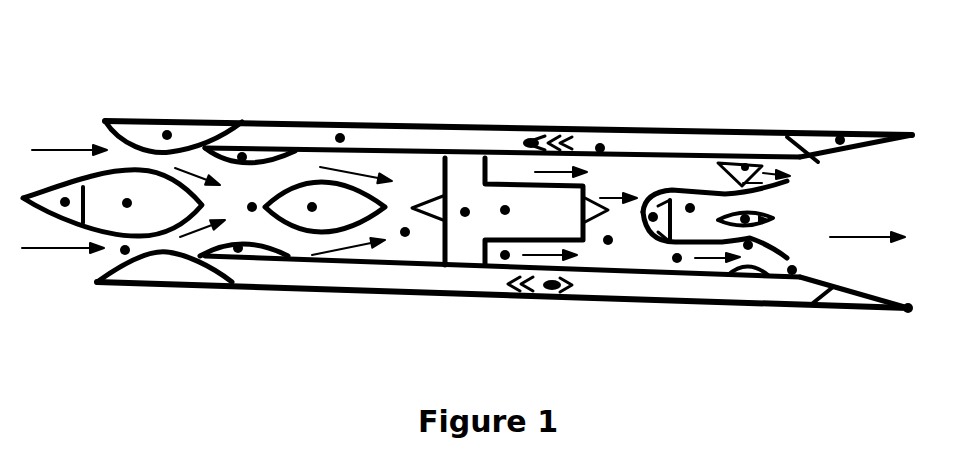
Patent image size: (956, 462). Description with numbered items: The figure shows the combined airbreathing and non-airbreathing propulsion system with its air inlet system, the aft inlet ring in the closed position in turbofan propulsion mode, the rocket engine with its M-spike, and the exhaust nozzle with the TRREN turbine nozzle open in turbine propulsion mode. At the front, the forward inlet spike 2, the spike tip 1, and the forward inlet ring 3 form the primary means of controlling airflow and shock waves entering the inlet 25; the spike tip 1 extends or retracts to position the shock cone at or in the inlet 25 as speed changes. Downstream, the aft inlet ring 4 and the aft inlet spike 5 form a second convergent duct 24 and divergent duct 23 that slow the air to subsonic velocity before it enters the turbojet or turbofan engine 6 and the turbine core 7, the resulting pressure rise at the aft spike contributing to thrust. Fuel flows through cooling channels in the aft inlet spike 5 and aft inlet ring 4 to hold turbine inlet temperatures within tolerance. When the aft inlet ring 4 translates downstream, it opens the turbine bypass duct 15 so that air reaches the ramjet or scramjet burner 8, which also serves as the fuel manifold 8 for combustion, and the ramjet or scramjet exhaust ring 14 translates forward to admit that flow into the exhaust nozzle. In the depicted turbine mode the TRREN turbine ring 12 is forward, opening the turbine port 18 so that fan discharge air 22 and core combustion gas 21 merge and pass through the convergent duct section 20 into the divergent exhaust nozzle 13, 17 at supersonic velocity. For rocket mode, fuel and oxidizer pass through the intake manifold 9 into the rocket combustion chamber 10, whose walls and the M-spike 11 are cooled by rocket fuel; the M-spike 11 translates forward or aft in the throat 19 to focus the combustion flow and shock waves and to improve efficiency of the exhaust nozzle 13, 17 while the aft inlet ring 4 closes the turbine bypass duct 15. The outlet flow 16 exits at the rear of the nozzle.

The spike tip 1 is at (66, 197).
The forward inlet spike 2 is at (126, 198).
The forward inlet ring 3 is at (167, 131).
The aft inlet ring 4 is at (242, 153).
The aft inlet spike 5 is at (312, 202).
The turbojet or turbofan engine 6 is at (464, 207).
The turbine core 7 is at (504, 205).
The ramjet or scramjet burner 8 is at (529, 138).
The intake manifold 9 is at (652, 212).
The rocket combustion chamber 10 is at (689, 203).
The M-spike 11 is at (744, 214).
The TRREN turbine ring 12 is at (746, 163).
The divergent exhaust nozzle 13 is at (813, 137).
The ramjet or scramjet exhaust ring 14 is at (841, 136).
The turbine bypass duct 15 is at (341, 134).
The outlet flow 16 is at (867, 215).
The divergent exhaust nozzle 17 is at (908, 313).
The turbine port 18 is at (792, 275).
The throat 19 is at (747, 250).
The convergent duct section 20 is at (677, 263).
The core combustion gas 21 is at (608, 245).
The fan discharge air 22 is at (503, 260).
The divergent duct 23 is at (404, 237).
The convergent duct 24 is at (254, 212).
The inlet 25 is at (124, 255).